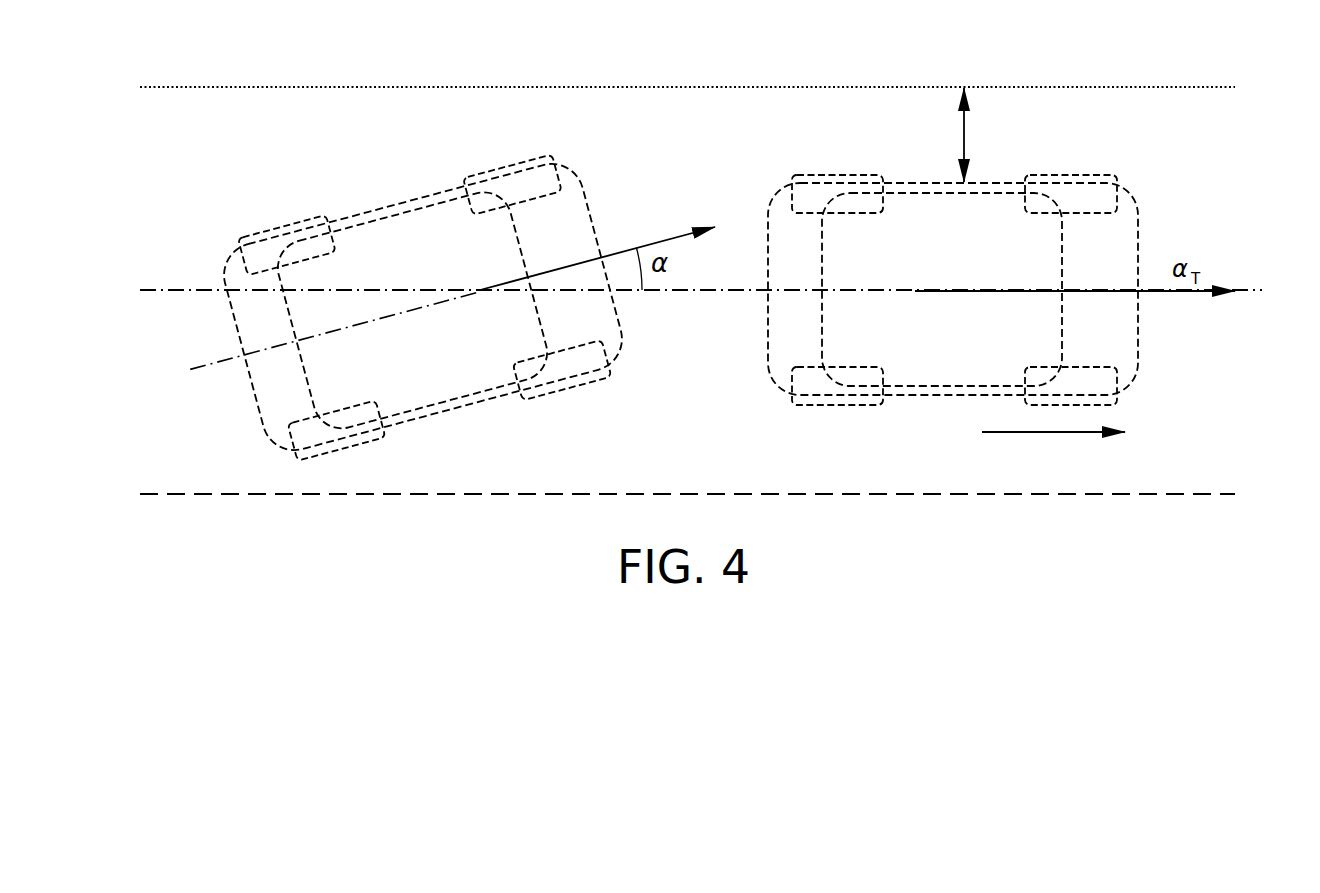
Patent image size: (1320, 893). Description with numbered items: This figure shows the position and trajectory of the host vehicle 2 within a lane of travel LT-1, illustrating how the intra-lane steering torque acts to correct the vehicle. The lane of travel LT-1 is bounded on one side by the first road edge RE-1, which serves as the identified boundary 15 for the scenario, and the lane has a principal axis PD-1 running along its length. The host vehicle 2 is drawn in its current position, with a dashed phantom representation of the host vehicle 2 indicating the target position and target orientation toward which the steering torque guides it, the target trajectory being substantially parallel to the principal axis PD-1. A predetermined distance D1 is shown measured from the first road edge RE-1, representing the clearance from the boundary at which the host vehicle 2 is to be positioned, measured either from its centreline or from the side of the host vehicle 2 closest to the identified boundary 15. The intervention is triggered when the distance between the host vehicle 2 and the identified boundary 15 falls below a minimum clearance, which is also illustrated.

The host vehicle 2 is at (388, 229).
The identified boundary 15 is at (1180, 493).
The first road edge RE-1 is at (1147, 87).
The lane of travel LT-1 is at (188, 176).
The predetermined distance D1 is at (985, 135).
The principal axis PD-1 is at (1053, 448).